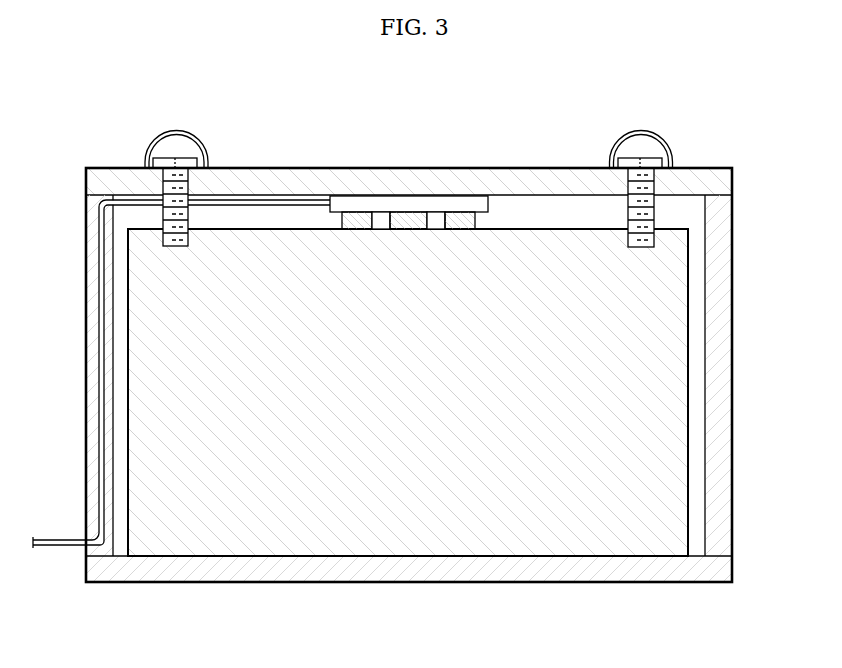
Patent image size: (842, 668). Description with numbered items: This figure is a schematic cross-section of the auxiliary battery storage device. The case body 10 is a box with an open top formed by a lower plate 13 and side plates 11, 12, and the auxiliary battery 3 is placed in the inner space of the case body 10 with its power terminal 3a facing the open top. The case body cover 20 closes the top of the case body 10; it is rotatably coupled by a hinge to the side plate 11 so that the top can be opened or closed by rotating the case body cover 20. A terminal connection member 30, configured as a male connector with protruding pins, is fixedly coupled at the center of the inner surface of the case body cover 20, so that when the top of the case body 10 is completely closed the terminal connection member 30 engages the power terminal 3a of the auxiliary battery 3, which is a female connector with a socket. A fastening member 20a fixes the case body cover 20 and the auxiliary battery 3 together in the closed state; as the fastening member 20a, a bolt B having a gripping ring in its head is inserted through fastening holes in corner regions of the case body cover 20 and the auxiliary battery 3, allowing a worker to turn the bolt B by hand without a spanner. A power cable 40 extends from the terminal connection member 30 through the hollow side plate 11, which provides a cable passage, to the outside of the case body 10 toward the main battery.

The case body 10 is at (413, 362).
The side plate 11 is at (86, 327).
The side plate 12 is at (733, 327).
The lower plate 13 is at (520, 583).
The case body cover 20 is at (277, 174).
The fastening member 20a is at (640, 130).
The terminal connection member 30 is at (399, 203).
The auxiliary battery 3 is at (391, 525).
The power terminal 3a is at (417, 223).
The power cable 40 is at (99, 419).
The bolt B is at (645, 213).